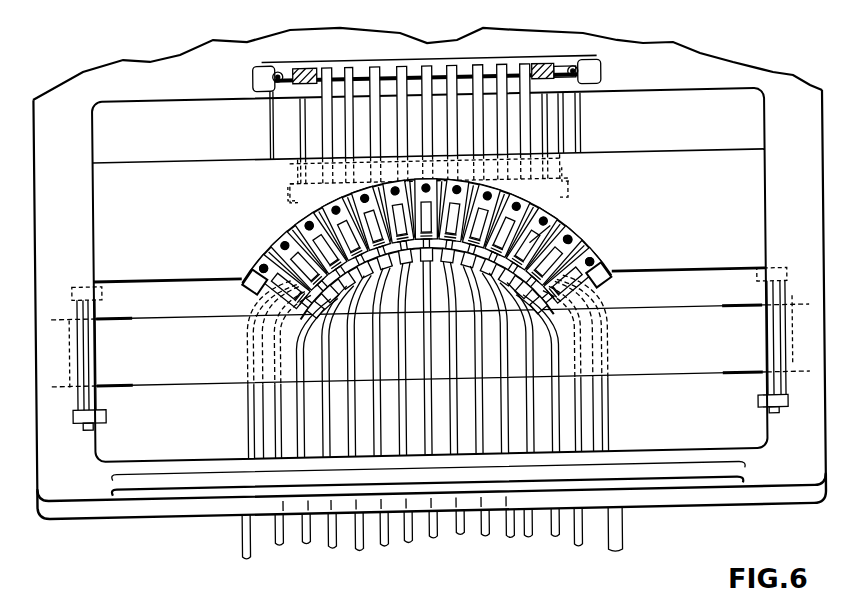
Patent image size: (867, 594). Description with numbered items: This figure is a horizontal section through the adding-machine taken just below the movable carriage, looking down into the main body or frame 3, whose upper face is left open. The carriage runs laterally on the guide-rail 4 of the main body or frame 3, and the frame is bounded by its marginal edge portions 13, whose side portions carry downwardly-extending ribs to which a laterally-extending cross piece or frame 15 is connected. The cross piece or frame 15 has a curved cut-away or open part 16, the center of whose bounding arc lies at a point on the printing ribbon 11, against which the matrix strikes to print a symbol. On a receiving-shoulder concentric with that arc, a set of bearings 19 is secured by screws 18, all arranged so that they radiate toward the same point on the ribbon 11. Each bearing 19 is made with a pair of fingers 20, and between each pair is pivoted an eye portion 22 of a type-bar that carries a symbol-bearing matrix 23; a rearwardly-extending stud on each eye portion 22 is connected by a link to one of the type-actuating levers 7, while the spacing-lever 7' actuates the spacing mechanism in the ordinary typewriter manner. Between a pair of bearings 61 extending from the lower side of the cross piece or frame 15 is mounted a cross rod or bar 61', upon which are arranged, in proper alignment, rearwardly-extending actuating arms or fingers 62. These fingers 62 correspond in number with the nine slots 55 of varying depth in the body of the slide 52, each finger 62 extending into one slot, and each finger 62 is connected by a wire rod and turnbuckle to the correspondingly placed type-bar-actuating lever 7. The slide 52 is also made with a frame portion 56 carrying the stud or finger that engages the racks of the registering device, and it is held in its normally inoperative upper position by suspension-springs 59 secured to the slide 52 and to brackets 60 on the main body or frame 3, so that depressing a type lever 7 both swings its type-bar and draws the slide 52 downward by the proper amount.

The main body or frame 3 is at (96, 508).
The guide-rail 4 is at (184, 476).
The type-actuating levers 7 is at (449, 543).
The spacing-lever 7' is at (249, 536).
The ribbon 11 is at (430, 349).
The marginal edge portions 13 is at (428, 254).
The cross piece or frame 15 is at (430, 275).
The curved cut-away or open part 16 is at (552, 231).
The screws 18 is at (594, 260).
The bearings 19 is at (580, 248).
The fingers 20 is at (598, 286).
The eye portion 22 is at (586, 298).
The symbol-bearing matrix 23 is at (553, 274).
The slide 52 is at (568, 74).
The slots 55 is at (497, 66).
The frame portion 56 is at (546, 66).
The suspension-springs 59 is at (580, 71).
The brackets 60 is at (605, 75).
The bearings 61 is at (427, 177).
The cross rod or bar 61' is at (429, 177).
The actuating arms or fingers 62 is at (532, 132).